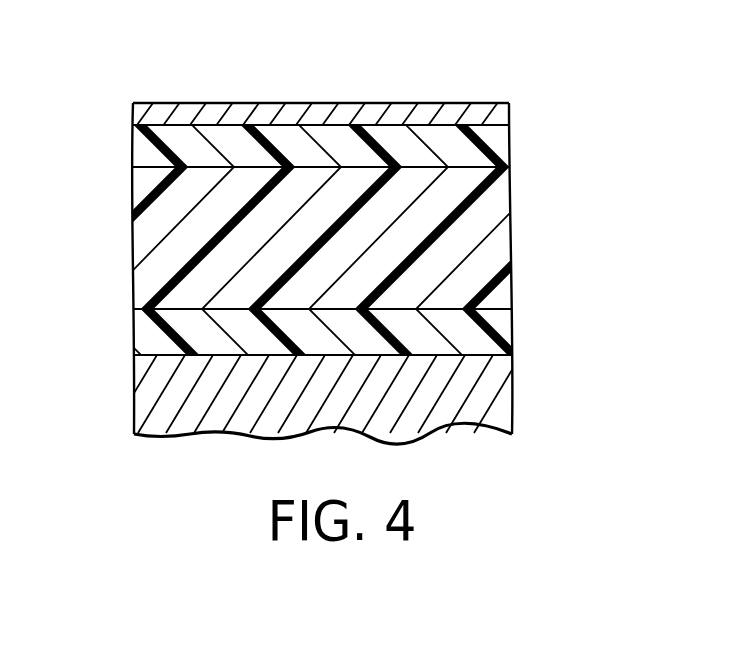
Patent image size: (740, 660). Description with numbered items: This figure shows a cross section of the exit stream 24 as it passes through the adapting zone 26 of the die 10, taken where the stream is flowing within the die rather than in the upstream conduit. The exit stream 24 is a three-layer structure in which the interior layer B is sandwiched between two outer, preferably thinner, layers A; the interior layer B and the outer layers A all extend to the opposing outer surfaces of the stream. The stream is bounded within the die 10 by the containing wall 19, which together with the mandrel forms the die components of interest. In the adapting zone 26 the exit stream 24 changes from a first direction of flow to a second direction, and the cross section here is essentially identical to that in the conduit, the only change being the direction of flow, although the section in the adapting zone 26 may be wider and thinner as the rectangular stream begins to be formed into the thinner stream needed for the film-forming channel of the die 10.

The annular die 10 is at (507, 431).
The exit stream 24 is at (319, 93).
The containing wall 19 is at (218, 122).
The adapting zone 26 is at (208, 357).
The outer layers A is at (495, 137).
The interior layer B is at (487, 213).